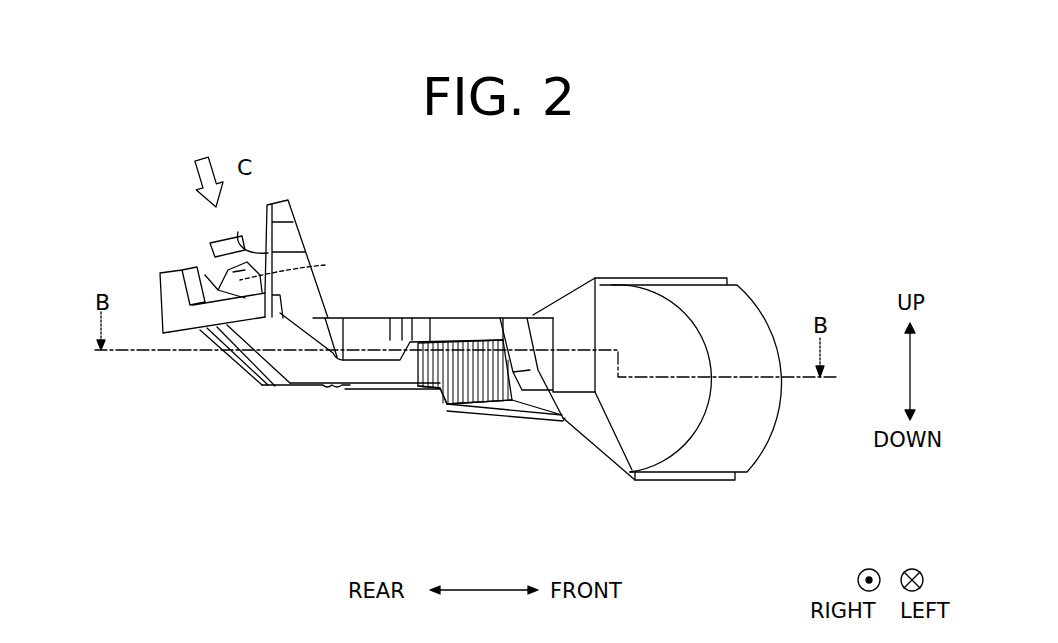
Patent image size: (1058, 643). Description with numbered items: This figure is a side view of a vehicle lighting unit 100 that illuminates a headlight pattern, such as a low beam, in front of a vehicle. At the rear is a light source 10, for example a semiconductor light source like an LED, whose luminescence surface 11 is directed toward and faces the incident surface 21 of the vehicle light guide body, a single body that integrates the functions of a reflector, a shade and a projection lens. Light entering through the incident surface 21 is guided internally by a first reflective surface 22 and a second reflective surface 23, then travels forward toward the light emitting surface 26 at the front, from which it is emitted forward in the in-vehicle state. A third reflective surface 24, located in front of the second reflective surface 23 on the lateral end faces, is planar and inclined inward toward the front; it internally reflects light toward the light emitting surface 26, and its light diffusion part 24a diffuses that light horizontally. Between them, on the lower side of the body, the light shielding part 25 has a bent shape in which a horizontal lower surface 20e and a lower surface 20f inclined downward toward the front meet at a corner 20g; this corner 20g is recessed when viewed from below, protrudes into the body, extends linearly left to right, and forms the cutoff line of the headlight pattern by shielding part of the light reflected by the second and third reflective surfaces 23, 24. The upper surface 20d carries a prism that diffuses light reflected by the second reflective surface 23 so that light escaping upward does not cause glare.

The vehicle lighting unit 100 is at (800, 198).
The light source 10 is at (238, 232).
The luminescence surface 11 is at (274, 240).
The incident surface 21 is at (325, 265).
The first reflective surface 22 is at (180, 272).
The second reflective surface 23 is at (242, 363).
The upper surface 20d is at (365, 318).
The surface 20e is at (360, 392).
The surface 20f is at (447, 411).
The corner 20g is at (432, 388).
The third reflective surface 24 is at (510, 408).
The light diffusion part 24a is at (500, 320).
The light shielding part 25 is at (455, 358).
The light emitting surface 26 is at (785, 413).